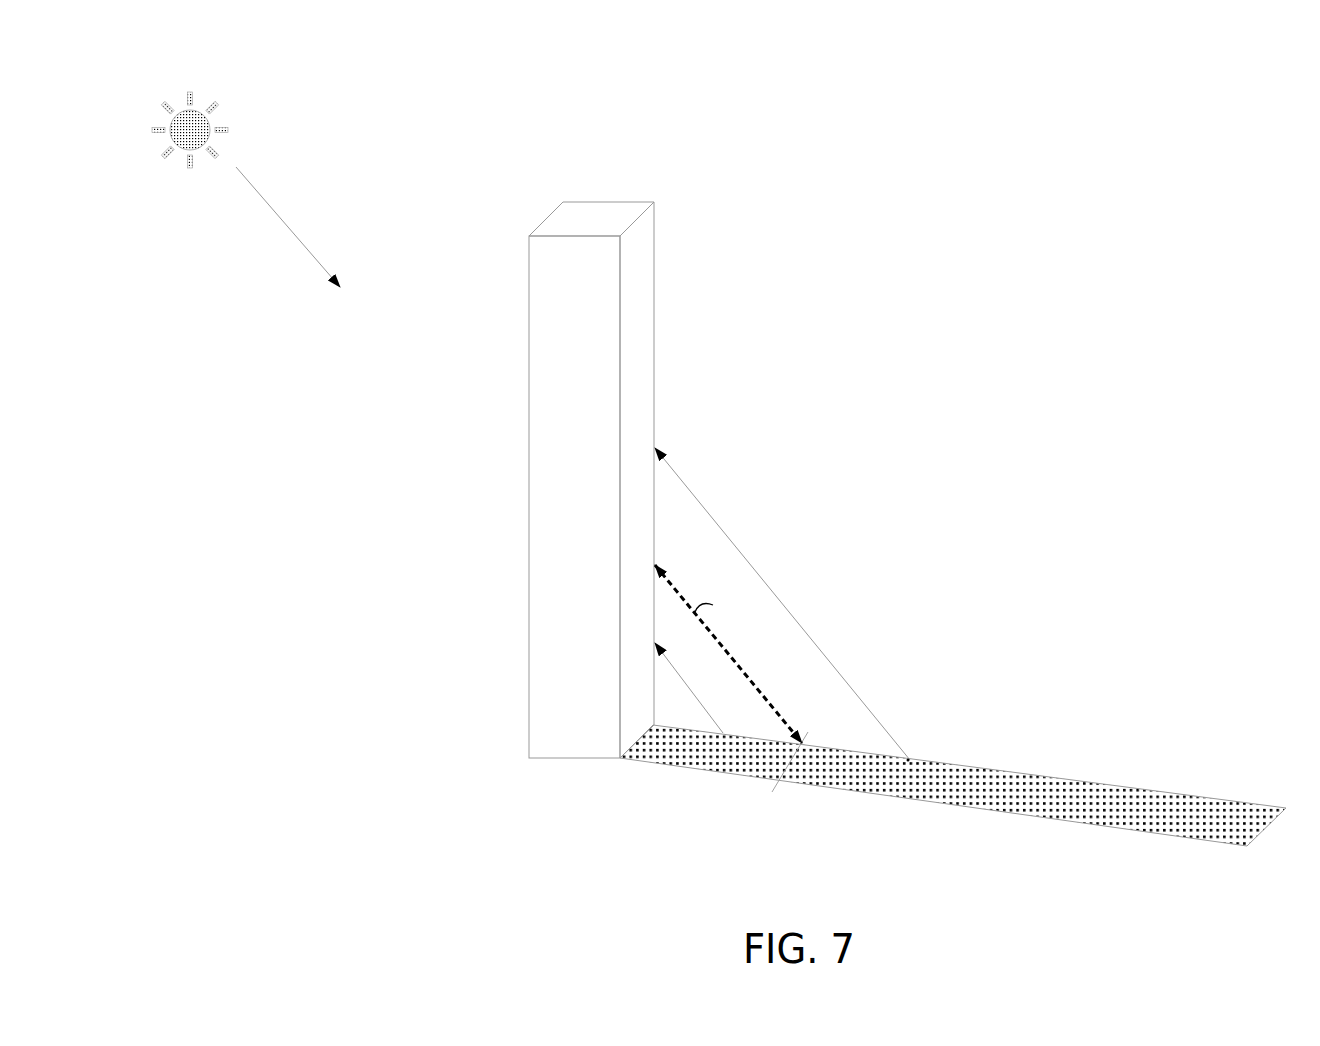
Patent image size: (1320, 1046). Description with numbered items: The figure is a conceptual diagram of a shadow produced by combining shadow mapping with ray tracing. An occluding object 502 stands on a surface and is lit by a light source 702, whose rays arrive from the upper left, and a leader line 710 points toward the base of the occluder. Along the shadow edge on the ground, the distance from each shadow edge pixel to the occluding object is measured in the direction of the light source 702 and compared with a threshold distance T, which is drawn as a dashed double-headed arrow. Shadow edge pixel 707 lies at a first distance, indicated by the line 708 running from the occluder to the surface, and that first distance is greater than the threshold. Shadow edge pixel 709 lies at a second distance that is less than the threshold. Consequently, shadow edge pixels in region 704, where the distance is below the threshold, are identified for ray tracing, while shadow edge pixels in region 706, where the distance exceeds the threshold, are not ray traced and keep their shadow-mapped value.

The light source 702 is at (213, 102).
The object casting shadow 502 is at (606, 202).
The region 704 is at (761, 790).
The region 706 is at (1228, 850).
The shadow edge pixel 707 is at (908, 760).
The ray of distance d1 708 is at (748, 562).
The shadow edge pixel 709 is at (725, 737).
The shadow boundary line 710 is at (700, 700).